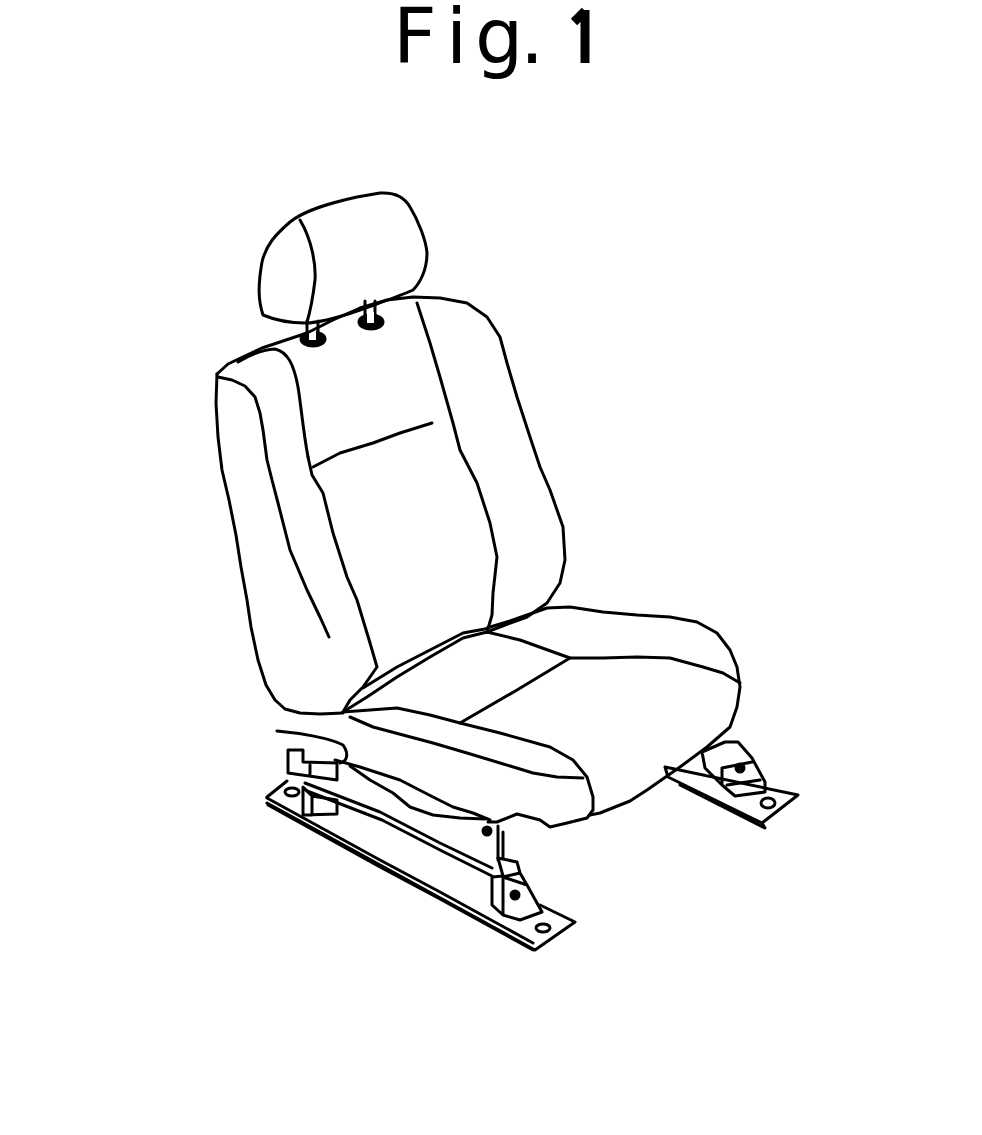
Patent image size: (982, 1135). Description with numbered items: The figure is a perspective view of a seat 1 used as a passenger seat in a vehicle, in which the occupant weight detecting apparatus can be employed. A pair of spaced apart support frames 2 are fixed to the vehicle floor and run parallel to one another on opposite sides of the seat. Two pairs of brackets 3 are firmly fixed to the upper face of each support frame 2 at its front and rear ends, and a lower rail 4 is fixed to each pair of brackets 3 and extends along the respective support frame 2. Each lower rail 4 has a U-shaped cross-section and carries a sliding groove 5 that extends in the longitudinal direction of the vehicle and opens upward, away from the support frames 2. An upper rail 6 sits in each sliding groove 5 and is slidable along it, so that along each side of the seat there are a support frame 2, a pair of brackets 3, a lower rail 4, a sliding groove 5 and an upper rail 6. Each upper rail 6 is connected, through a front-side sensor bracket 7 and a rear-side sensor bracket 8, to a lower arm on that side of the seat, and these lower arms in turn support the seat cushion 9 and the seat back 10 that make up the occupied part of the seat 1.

The seat 1 is at (615, 425).
The support frame 2 is at (503, 920).
The bracket 3 is at (293, 810).
The lower rail 4 is at (412, 837).
The sliding groove 5 is at (505, 840).
The upper rail 6 is at (388, 808).
The front-side sensor bracket 7 is at (500, 822).
The rear-side sensor bracket 8 is at (282, 724).
The seat cushion 9 is at (713, 640).
The seat back 10 is at (233, 445).